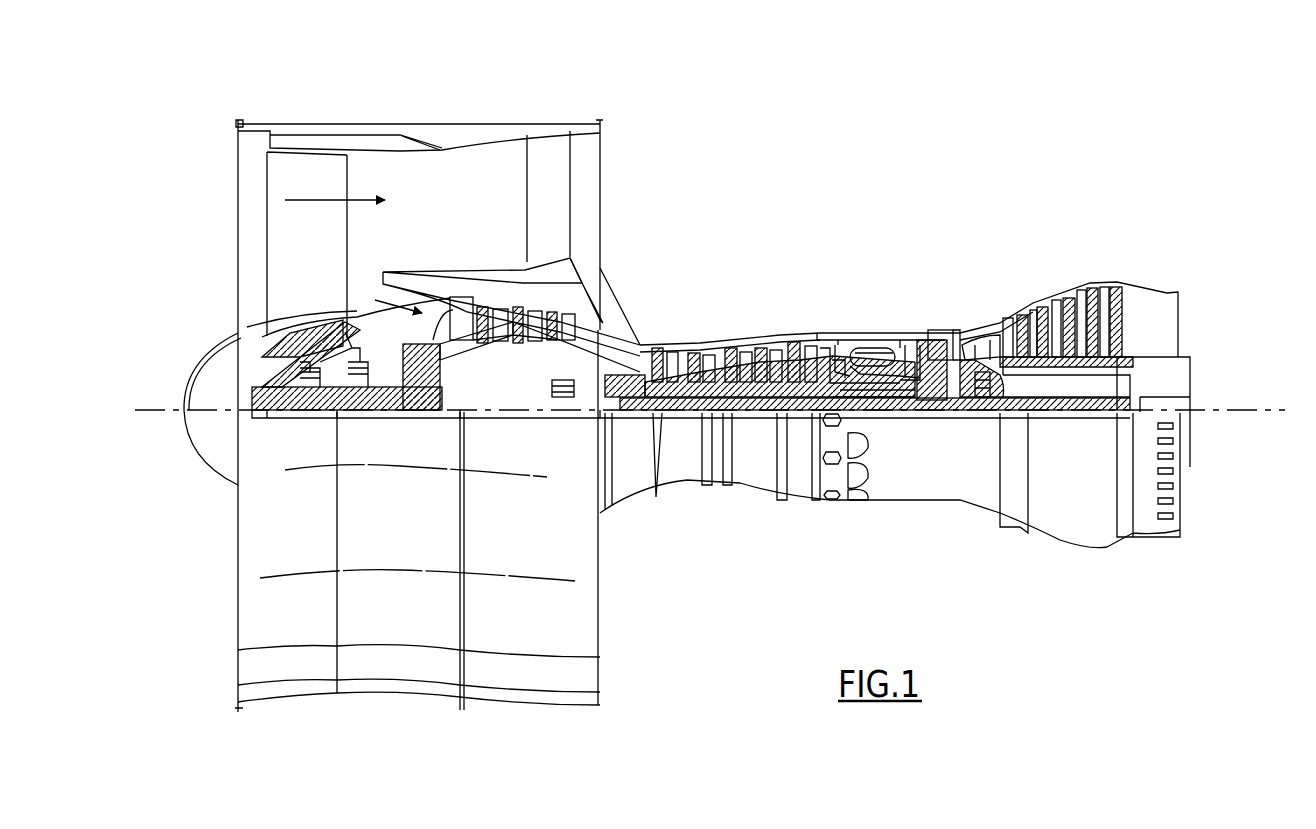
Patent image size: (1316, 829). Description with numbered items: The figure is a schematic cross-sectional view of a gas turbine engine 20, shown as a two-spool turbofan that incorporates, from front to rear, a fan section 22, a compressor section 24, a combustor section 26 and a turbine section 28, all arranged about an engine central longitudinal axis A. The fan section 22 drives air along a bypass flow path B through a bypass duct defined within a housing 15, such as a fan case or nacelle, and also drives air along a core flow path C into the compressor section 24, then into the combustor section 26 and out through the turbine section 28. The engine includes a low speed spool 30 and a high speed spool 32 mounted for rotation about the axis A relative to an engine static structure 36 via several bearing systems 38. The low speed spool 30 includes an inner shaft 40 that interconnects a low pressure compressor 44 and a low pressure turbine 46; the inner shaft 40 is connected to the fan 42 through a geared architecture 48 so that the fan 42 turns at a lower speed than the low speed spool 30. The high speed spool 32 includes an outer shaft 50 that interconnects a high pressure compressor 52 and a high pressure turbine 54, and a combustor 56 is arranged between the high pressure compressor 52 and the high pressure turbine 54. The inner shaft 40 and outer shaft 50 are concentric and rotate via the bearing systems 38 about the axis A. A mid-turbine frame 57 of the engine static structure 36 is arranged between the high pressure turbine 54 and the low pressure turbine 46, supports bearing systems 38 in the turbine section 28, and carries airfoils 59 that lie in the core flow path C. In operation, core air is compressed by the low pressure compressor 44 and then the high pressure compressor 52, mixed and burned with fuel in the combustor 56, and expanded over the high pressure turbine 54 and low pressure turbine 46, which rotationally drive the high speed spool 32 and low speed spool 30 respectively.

The housing 15 is at (415, 132).
The gas turbine engine 20 is at (880, 178).
The fan section 22 is at (344, 122).
The compressor section 24 is at (650, 320).
The combustor section 26 is at (872, 308).
The turbine section 28 is at (1020, 273).
The low speed spool 30 is at (757, 413).
The high speed spool 32 is at (797, 380).
The engine static structure 36 is at (798, 500).
The bearing systems 38 is at (557, 400).
The inner shaft 40 is at (618, 417).
The fan 42 is at (322, 253).
The low pressure compressor 44 is at (523, 322).
The low pressure turbine 46 is at (1065, 307).
The geared architecture 48 is at (427, 397).
The outer shaft 50 is at (883, 410).
The high pressure compressor 52 is at (735, 383).
The high pressure turbine 54 is at (938, 330).
The combustor 56 is at (873, 357).
The mid-turbine frame 57 is at (984, 318).
The airfoils 59 is at (990, 348).
The engine central longitudinal axis A is at (1273, 410).
The bypass flow path B is at (318, 200).
The core flow path C is at (375, 300).